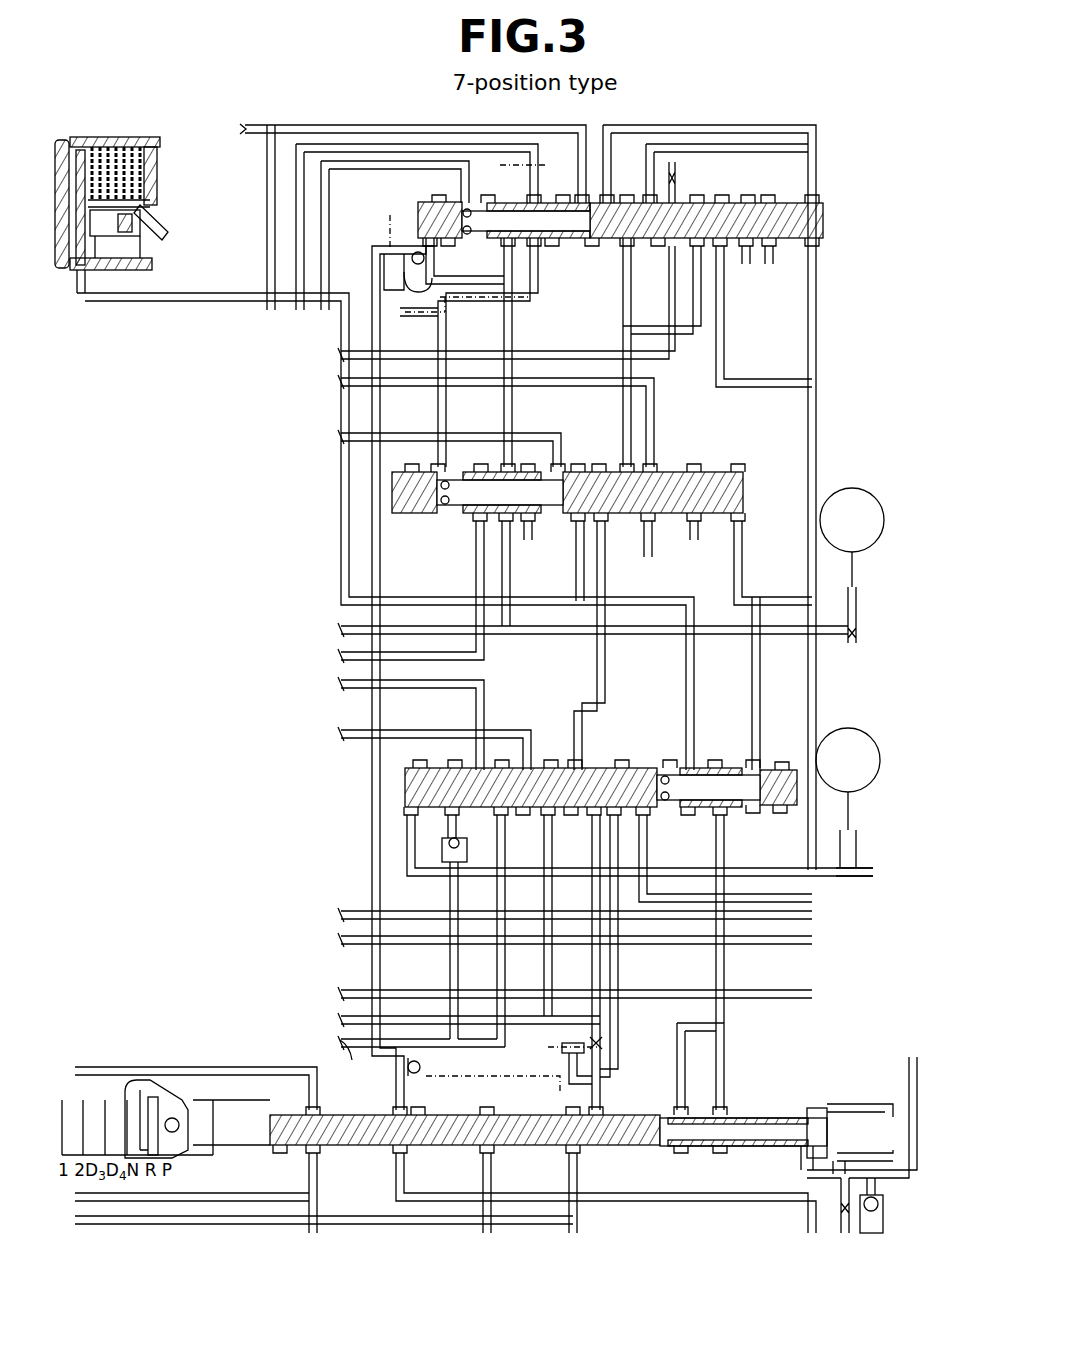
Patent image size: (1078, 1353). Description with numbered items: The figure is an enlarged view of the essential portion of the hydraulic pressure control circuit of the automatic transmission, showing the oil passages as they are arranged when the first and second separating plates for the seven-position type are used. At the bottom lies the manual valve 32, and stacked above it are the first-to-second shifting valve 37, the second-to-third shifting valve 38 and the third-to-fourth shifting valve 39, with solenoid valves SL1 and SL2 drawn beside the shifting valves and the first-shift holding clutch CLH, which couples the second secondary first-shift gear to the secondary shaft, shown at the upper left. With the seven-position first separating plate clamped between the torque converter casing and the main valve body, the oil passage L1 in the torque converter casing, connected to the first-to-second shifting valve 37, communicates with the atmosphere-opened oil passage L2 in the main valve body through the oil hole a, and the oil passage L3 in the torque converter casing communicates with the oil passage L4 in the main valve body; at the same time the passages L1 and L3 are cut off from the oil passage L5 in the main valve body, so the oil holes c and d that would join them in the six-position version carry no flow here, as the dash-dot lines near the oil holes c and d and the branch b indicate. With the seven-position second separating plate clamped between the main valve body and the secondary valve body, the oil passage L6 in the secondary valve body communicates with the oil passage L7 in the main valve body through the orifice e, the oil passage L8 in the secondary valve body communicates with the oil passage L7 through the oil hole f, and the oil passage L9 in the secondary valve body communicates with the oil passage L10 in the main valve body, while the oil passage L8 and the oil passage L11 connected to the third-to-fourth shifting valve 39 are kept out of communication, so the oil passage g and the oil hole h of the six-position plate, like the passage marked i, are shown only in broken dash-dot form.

The manual valve 32 is at (745, 1102).
The 1–2 shifting valve 37 is at (626, 766).
The 2–3 shifting valve 38 is at (691, 466).
The 3–4 shifting valve 39 is at (736, 206).
The first-shift holding clutch CLH is at (172, 216).
The solenoid valve SL1 is at (848, 802).
The solenoid valve SL2 is at (852, 565).
The oil passage L1 is at (592, 977).
The atmosphere-opened oil passage L2 is at (606, 1084).
The oil passage L3 is at (372, 976).
The oil passage L4 is at (332, 1070).
The oil passage L5 is at (492, 1077).
The oil passage L6 is at (506, 280).
The oil passage L7 is at (376, 406).
The oil passage L8 is at (442, 406).
The oil passage L9 is at (532, 188).
The oil passage L10 is at (400, 136).
The oil passage L11 is at (526, 299).
The oil hole a is at (600, 1050).
The port b is at (346, 1044).
The oil hole c is at (575, 1047).
The oil hole d is at (411, 1075).
The orifice e is at (385, 237).
The oil hole f is at (408, 316).
The oil passage g is at (418, 270).
The oil hole h is at (440, 316).
The orifice i is at (527, 166).